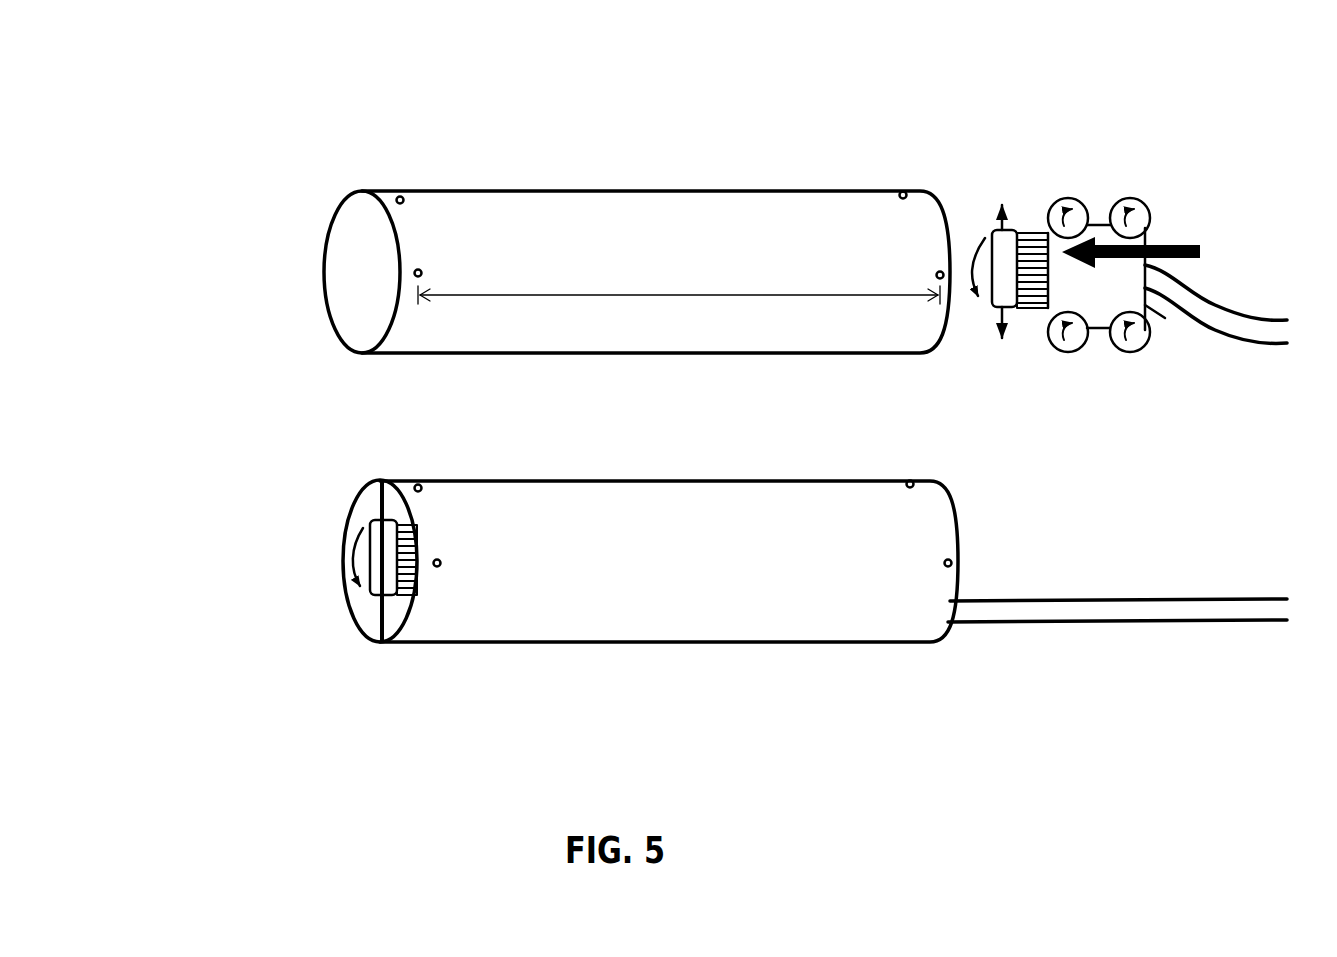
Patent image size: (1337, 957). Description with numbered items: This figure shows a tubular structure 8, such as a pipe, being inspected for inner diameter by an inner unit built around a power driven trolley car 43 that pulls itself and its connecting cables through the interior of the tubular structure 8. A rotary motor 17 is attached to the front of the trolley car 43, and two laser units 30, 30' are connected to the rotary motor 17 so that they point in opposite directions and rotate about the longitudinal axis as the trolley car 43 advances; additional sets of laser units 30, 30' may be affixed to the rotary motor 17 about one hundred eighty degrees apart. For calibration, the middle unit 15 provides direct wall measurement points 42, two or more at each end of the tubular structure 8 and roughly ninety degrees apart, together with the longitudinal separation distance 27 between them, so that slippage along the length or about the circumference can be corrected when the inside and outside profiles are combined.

The tubular structure 8 is at (610, 191).
The middle unit 15 is at (381, 138).
The rotary motor 17 is at (1030, 309).
The longitudinal separation distance 27 is at (553, 296).
The laser unit 30 is at (961, 209).
The laser unit 30' is at (951, 356).
The direct wall measurement points 42 is at (428, 266).
The trolley car 43 is at (1165, 318).